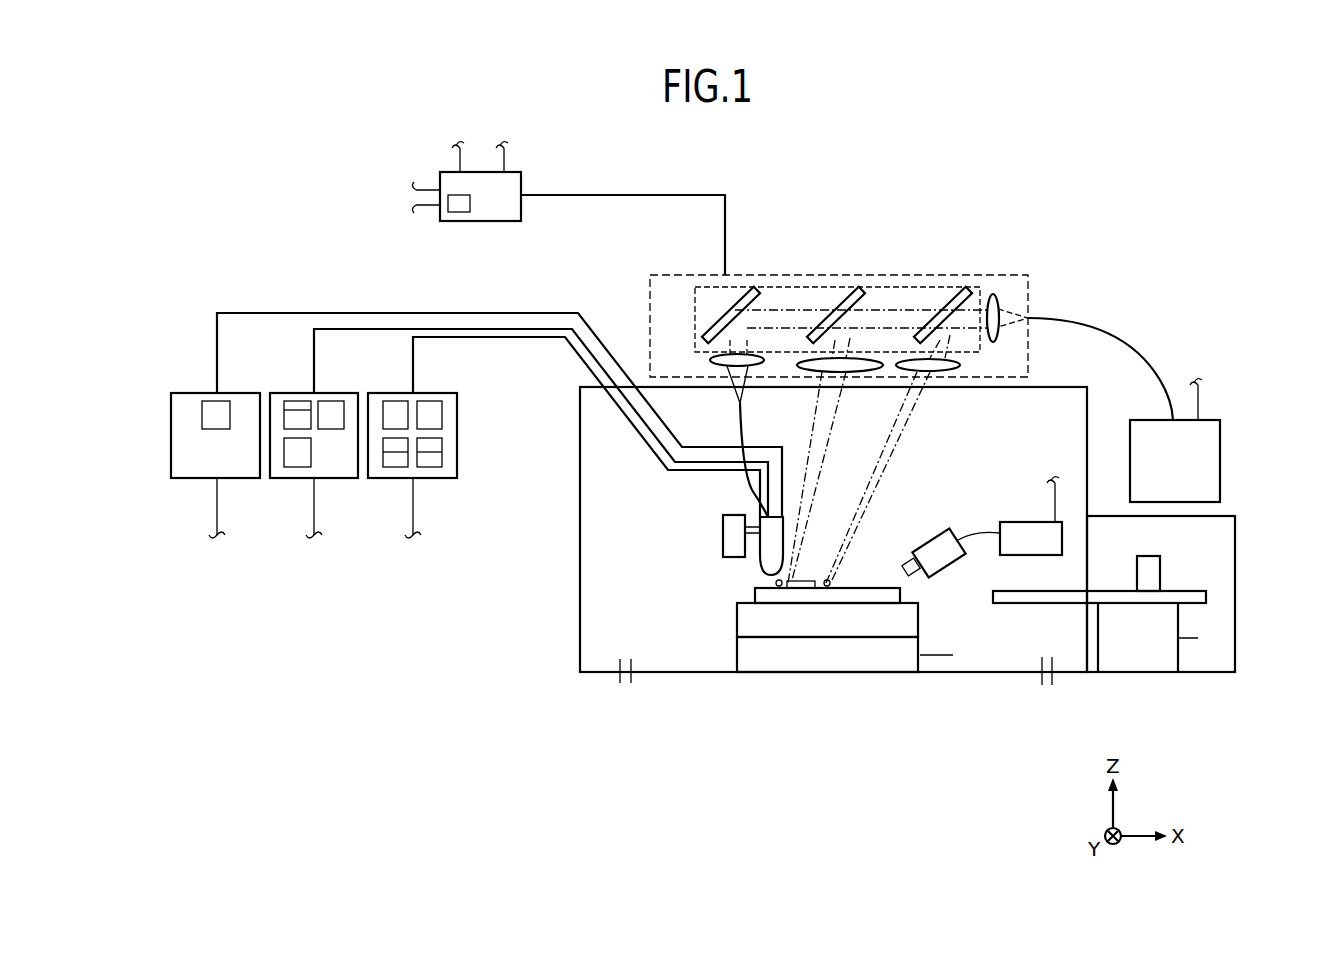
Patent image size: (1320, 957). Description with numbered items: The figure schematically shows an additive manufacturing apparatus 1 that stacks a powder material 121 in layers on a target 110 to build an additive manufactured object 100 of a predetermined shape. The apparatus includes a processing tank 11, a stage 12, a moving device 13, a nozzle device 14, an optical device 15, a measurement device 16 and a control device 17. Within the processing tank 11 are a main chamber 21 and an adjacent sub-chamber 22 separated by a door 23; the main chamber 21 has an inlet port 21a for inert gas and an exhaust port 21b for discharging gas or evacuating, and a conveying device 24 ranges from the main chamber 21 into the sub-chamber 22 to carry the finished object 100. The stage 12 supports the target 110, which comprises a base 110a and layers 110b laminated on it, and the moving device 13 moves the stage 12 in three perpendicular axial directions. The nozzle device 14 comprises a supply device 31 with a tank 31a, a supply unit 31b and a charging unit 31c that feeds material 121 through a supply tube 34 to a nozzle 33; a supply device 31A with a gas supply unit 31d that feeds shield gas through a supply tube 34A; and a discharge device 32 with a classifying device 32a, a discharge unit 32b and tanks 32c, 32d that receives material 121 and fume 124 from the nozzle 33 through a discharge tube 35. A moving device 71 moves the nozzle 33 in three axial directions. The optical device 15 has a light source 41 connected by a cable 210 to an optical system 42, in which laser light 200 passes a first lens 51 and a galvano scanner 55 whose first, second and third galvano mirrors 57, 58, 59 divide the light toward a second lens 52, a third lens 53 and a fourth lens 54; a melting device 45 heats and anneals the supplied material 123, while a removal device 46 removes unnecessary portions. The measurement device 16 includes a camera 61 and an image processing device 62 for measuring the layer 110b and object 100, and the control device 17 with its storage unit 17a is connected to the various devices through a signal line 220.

The additive manufacturing apparatus 1 is at (963, 214).
The processing tank 11 is at (579, 415).
The stage 12 is at (737, 620).
The moving device 13 is at (737, 655).
The nozzle device 14 is at (615, 338).
The optical device 15 is at (1058, 278).
The measurement device 16 is at (1025, 484).
The control device 17 is at (521, 195).
The storage unit 17a is at (470, 212).
The main chamber 21 is at (963, 672).
The inlet port 21a is at (620, 683).
The exhaust port 21b is at (1053, 683).
The sub-chamber 22 is at (1220, 672).
The door 23 is at (1088, 537).
The conveying device 24 is at (1178, 655).
The supply device 31A is at (188, 393).
The supply device 31 is at (337, 401).
The tank 31a is at (296, 401).
The supply unit 31b is at (332, 429).
The charging unit 31c is at (297, 467).
The gas supply unit 31d is at (216, 429).
The discharge device 32 is at (457, 440).
The classifying device 32a is at (393, 401).
The discharge unit 32b is at (437, 401).
The tank 32c is at (403, 470).
The tank 32d is at (442, 452).
The nozzle 33 is at (762, 530).
The supply tube 34 is at (373, 329).
The supply tube 34A is at (297, 313).
The discharge tube 35 is at (506, 340).
The light source 41 is at (1220, 456).
The optical system 42 is at (915, 275).
The melting device 45 is at (868, 379).
The removal device 46 is at (952, 379).
The first lens 51 is at (994, 294).
The second lens 52 is at (731, 366).
The third lens 53 is at (840, 373).
The fourth lens 54 is at (925, 373).
The galvano scanner 55 is at (883, 287).
The first galvano mirror 57 is at (950, 290).
The second galvano mirror 58 is at (845, 290).
The third galvano mirror 59 is at (737, 290).
The camera 61 is at (933, 534).
The image processing device 62 is at (1038, 555).
The moving device 71 is at (723, 525).
The additive manufactured object 100 is at (1160, 568).
The target 110 is at (890, 588).
The base 110a is at (860, 588).
The layer 110b is at (800, 562).
The material 121 is at (284, 420).
The material 123 is at (776, 583).
The fume 124 is at (442, 460).
The laser light 200 is at (791, 310).
The cable 210 is at (1128, 338).
The signal line 220 is at (459, 151).